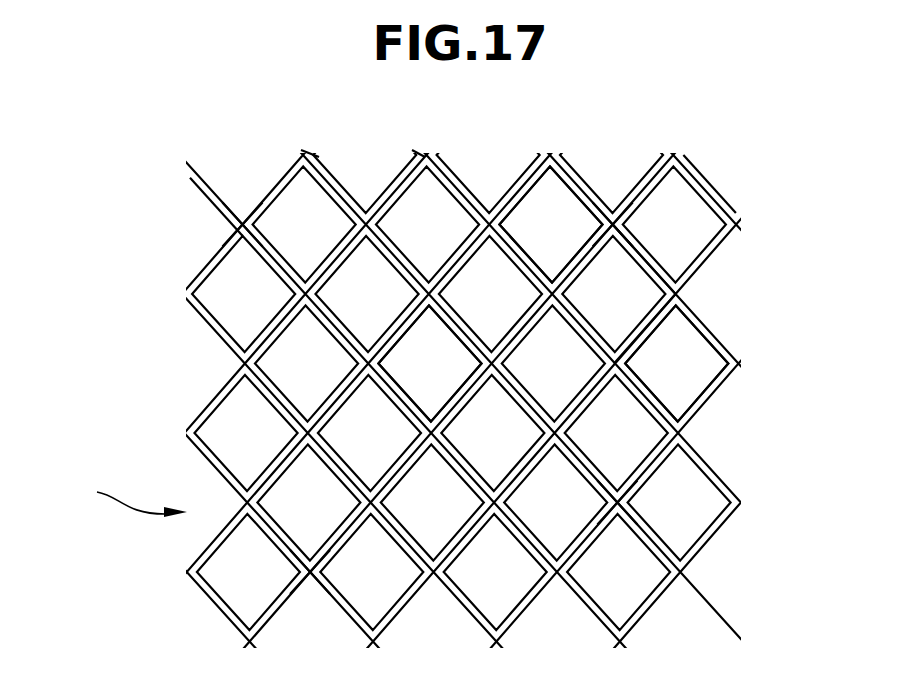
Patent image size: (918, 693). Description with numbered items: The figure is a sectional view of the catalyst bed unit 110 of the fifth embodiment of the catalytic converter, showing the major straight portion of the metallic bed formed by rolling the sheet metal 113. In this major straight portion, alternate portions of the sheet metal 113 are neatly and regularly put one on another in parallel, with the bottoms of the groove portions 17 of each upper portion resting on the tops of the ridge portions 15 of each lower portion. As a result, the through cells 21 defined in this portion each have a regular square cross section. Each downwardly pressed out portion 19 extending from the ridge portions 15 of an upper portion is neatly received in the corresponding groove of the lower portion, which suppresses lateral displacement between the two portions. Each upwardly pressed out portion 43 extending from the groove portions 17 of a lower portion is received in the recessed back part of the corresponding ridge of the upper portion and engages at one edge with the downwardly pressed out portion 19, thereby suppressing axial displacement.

The catalyst bed unit 110 is at (676, 104).
The sheet metal 113 is at (112, 495).
The ridge portions 15 is at (242, 230).
The groove portions 17 is at (302, 291).
The downwardly pressed out portions 19 is at (271, 250).
The through cells 21 is at (677, 357).
The upwardly pressed out portions 43 is at (534, 188).